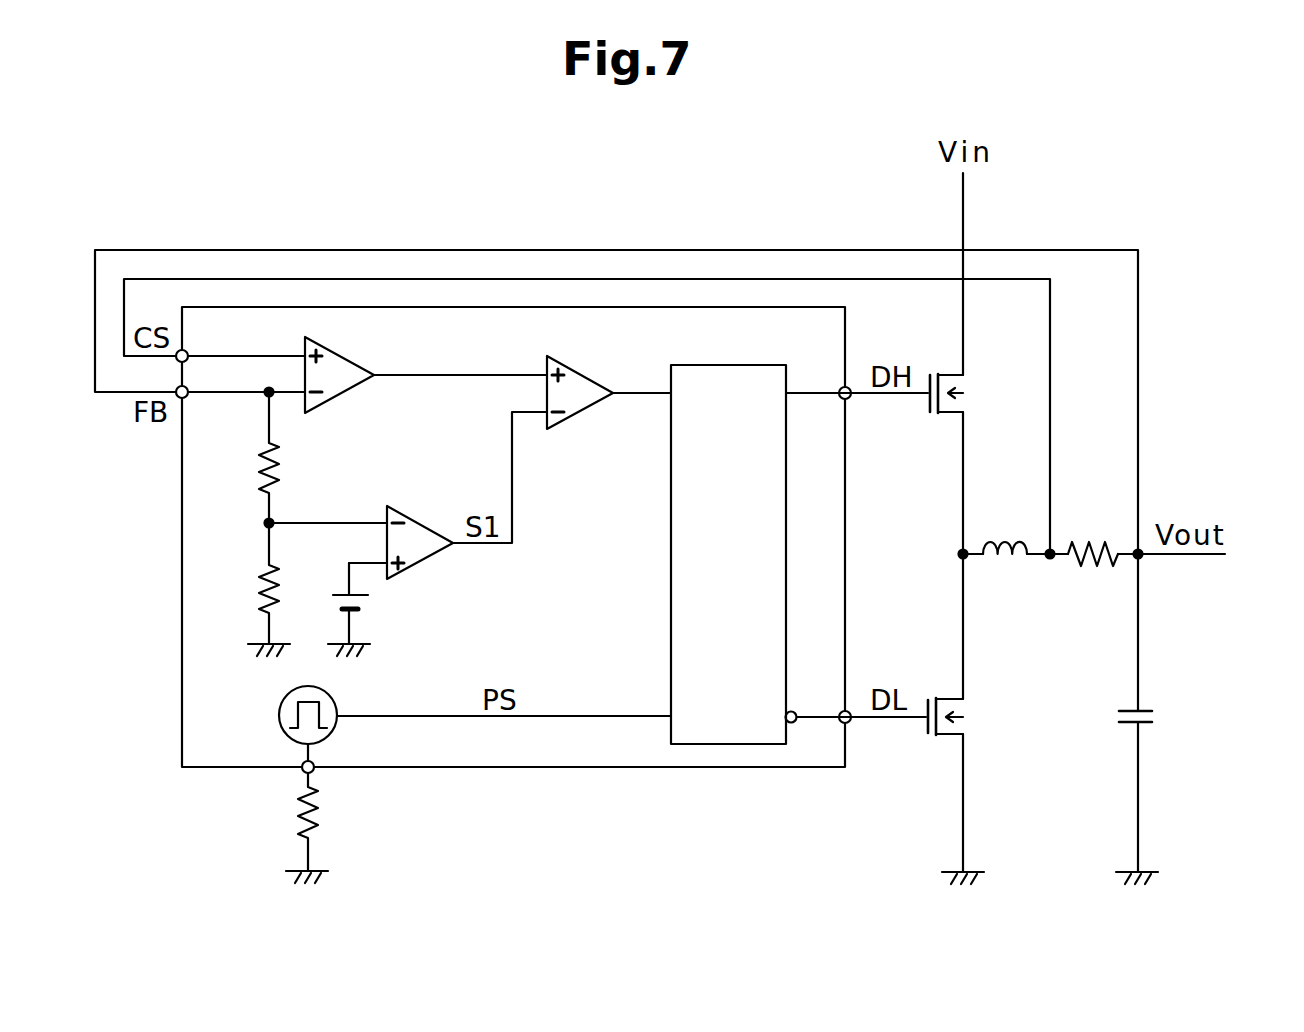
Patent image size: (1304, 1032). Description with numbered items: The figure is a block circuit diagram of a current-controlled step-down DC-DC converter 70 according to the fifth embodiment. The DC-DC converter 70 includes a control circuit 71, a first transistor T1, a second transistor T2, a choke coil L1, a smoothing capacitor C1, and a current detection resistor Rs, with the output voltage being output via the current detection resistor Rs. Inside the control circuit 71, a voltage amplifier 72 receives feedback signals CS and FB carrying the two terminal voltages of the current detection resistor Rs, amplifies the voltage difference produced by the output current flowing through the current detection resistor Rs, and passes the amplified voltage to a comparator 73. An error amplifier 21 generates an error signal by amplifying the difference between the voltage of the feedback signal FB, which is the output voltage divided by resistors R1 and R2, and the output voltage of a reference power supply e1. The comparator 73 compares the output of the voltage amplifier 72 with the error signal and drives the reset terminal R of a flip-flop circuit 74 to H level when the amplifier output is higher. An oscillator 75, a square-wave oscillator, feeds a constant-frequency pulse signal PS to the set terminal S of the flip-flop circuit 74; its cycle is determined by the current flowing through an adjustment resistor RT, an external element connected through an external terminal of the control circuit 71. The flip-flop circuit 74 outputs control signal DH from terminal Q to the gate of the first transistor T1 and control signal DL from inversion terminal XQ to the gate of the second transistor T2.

The current-controlled step-down DC-DC converter 70 is at (1196, 210).
The control circuit 71 is at (851, 321).
The voltage amplifier 72 is at (350, 357).
The comparator 73 is at (583, 373).
The flip-flop circuit 74 is at (760, 365).
The oscillator 75 is at (333, 691).
The error amplifier 21 is at (430, 524).
The resistor R1 is at (283, 458).
The resistor R2 is at (282, 578).
The adjustment resistor RT is at (319, 817).
The reference power supply e1 is at (358, 612).
The first transistor T1 is at (956, 380).
The second transistor T2 is at (955, 706).
The choke coil L1 is at (1004, 540).
The current detection resistor Rs is at (1079, 542).
The smoothing capacitor C1 is at (1141, 709).